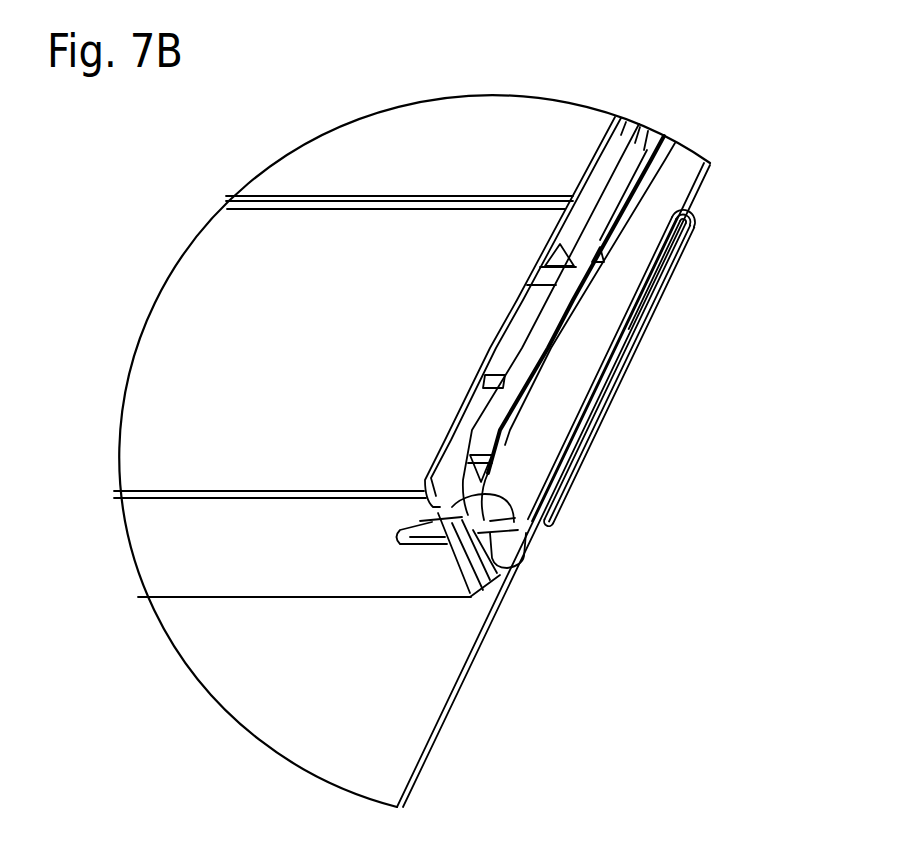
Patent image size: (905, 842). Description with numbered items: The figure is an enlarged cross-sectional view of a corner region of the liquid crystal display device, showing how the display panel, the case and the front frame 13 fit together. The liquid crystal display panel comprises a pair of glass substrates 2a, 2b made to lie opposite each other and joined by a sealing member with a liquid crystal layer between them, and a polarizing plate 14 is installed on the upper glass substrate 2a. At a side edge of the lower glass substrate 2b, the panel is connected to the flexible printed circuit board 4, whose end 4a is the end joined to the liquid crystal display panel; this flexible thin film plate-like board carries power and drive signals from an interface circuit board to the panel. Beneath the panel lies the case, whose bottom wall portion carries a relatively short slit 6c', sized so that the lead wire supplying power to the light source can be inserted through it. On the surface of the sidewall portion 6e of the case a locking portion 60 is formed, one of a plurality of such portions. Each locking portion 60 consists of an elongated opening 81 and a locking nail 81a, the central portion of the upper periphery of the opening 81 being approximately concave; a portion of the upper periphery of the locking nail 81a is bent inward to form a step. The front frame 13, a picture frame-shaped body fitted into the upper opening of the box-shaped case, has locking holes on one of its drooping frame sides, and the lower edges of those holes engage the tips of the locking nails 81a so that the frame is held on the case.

The polarizing plate 14 is at (383, 140).
The front frame 13 is at (207, 317).
The glass substrate 2a is at (636, 121).
The glass substrate 2b is at (656, 131).
The flexible printed circuit board 4 is at (398, 780).
The end 4a is at (500, 397).
The locking nail 81a is at (522, 512).
The elongated opening 81 is at (447, 570).
The locking portion 60 is at (417, 553).
The slit 6c' is at (533, 586).
The sidewall portion 6e is at (330, 578).